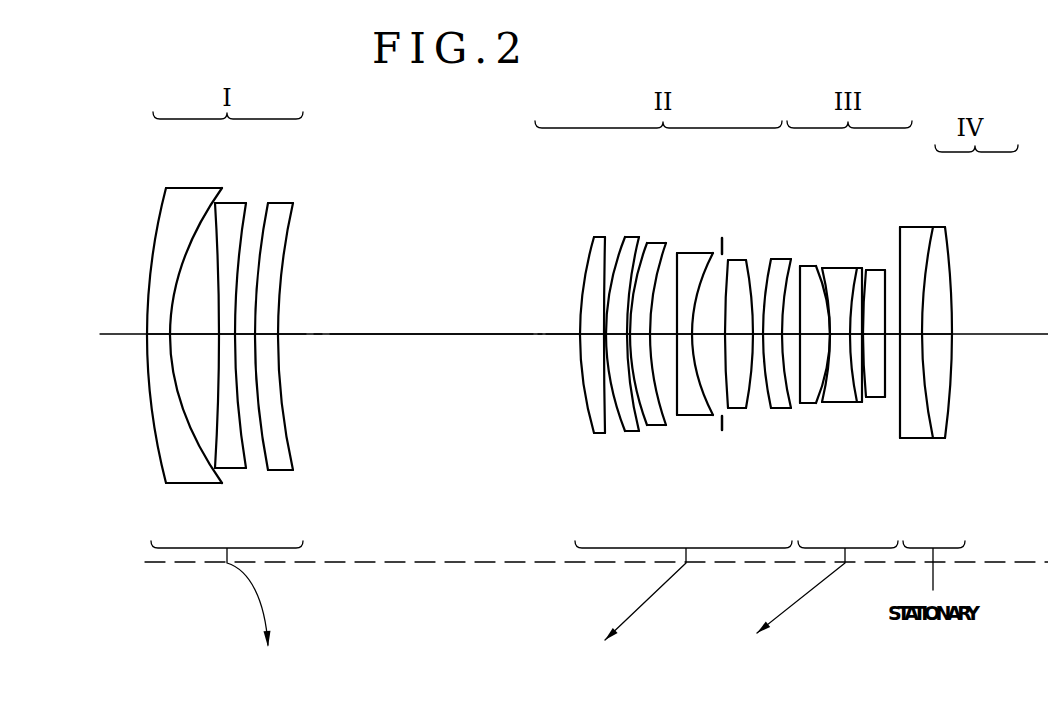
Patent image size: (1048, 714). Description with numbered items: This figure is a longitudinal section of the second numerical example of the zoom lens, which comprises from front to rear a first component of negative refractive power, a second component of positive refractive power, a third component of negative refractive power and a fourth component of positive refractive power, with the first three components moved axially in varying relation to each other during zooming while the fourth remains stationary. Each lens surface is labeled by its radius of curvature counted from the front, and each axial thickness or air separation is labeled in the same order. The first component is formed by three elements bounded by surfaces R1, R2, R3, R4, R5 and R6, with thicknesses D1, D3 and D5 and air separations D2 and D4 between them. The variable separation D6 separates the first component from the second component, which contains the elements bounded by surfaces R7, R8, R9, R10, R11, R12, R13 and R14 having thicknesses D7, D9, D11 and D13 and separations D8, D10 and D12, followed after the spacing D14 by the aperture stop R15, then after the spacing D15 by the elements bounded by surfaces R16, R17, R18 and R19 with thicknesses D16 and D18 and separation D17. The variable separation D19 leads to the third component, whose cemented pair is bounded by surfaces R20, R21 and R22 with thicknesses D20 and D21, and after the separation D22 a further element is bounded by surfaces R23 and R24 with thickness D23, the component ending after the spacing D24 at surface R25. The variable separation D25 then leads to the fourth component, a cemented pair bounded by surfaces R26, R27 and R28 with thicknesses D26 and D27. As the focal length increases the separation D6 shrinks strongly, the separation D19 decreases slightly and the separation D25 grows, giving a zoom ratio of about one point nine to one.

The first lens surface R1 is at (154, 212).
The second lens surface R2 is at (202, 196).
The third lens surface R3 is at (219, 215).
The fourth lens surface R4 is at (236, 218).
The fifth lens surface R5 is at (266, 213).
The sixth lens surface R6 is at (283, 204).
The seventh lens surface R7 is at (588, 262).
The eighth lens surface R8 is at (600, 238).
The ninth lens surface R9 is at (622, 240).
The tenth lens surface R10 is at (636, 240).
The eleventh lens surface R11 is at (648, 246).
The twelfth lens surface R12 is at (664, 246).
The thirteenth lens surface R13 is at (677, 255).
The fourteenth lens surface R14 is at (710, 255).
The aperture stop R15 is at (727, 262).
The sixteenth lens surface R16 is at (745, 262).
The seventeenth lens surface R17 is at (771, 259).
The eighteenth lens surface R18 is at (789, 260).
The nineteenth lens surface R19 is at (800, 267).
The twentieth lens surface R20 is at (815, 266).
The twenty-first lens surface R21 is at (823, 268).
The twenty-second lens surface R22 is at (854, 268).
The twenty-third lens surface R23 is at (860, 268).
The twenty-fourth lens surface R24 is at (866, 272).
The twenty-fifth lens surface R25 is at (886, 272).
The twenty-sixth lens surface R26 is at (902, 240).
The twenty-seventh lens surface R27 is at (933, 245).
The twenty-eighth lens surface R28 is at (947, 268).
The first lens thickness D1 is at (157, 334).
The second air separation D2 is at (192, 334).
The third lens thickness D3 is at (229, 334).
The fourth air separation D4 is at (244, 334).
The fifth lens thickness D5 is at (266, 334).
The sixth air separation D6 is at (428, 334).
The seventh lens thickness D7 is at (592, 334).
The eighth air separation D8 is at (605, 334).
The ninth lens thickness D9 is at (616, 334).
The tenth air separation D10 is at (629, 334).
The eleventh lens thickness D11 is at (640, 334).
The twelfth air separation D12 is at (663, 334).
The thirteenth lens thickness D13 is at (685, 334).
The fourteenth air separation D14 is at (708, 334).
The fifteenth air separation D15 is at (739, 334).
The sixteenth lens thickness D16 is at (758, 334).
The seventeenth air separation D17 is at (772, 334).
The eighteenth lens thickness D18 is at (791, 334).
The nineteenth air separation D19 is at (815, 334).
The twentieth lens thickness D20 is at (830, 334).
The twenty-first lens thickness D21 is at (840, 334).
The twenty-second air separation D22 is at (856, 334).
The twenty-third lens thickness D23 is at (863, 334).
The twenty-fourth air separation D24 is at (875, 334).
The twenty-fifth air separation D25 is at (892, 334).
The twenty-sixth lens thickness D26 is at (911, 334).
The twenty-seventh lens thickness D27 is at (942, 334).